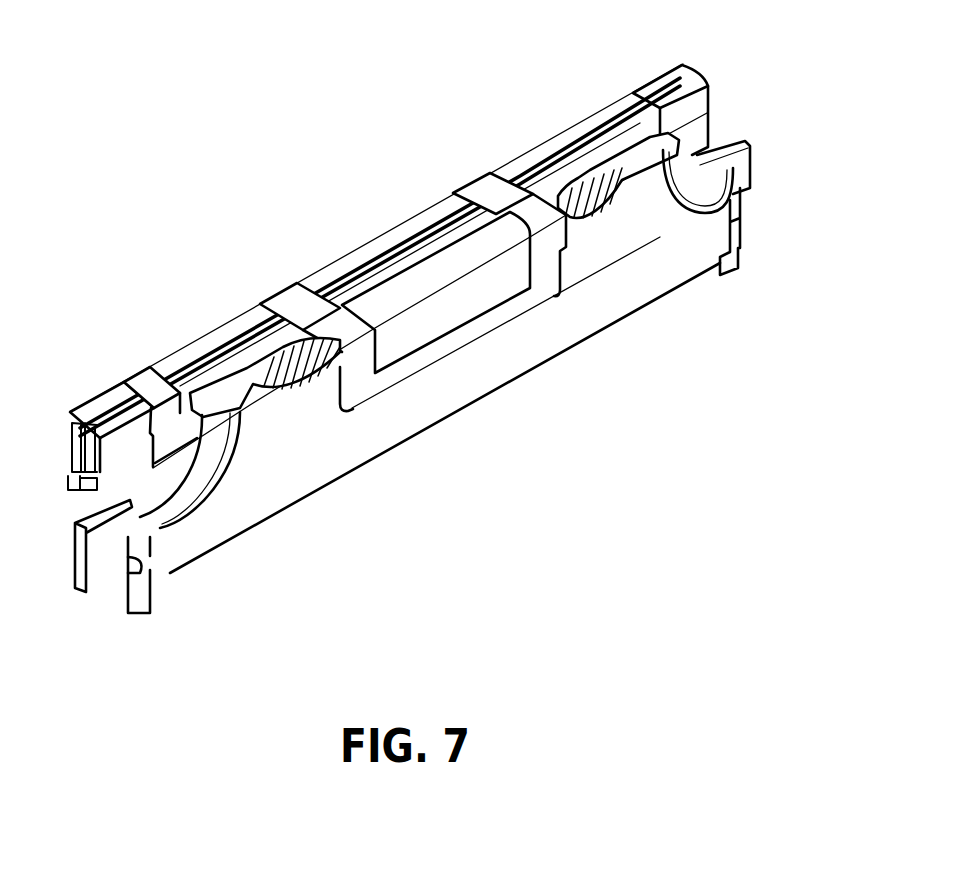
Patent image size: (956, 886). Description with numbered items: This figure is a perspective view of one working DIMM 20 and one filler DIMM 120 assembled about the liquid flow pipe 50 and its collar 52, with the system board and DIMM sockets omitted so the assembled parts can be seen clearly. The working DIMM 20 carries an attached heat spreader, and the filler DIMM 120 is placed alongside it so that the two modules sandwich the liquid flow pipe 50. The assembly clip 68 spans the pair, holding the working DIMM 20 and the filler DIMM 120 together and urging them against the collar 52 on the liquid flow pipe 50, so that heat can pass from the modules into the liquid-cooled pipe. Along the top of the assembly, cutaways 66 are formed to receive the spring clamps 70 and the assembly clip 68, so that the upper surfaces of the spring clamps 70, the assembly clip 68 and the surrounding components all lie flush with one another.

The working DIMM 20 is at (727, 88).
The liquid flow pipe 50 is at (80, 510).
The collar 52 is at (142, 490).
The cutaways 66 is at (292, 277).
The assembly clip 68 is at (482, 188).
The spring clamps 70 is at (140, 382).
The filler DIMM 120 is at (753, 230).